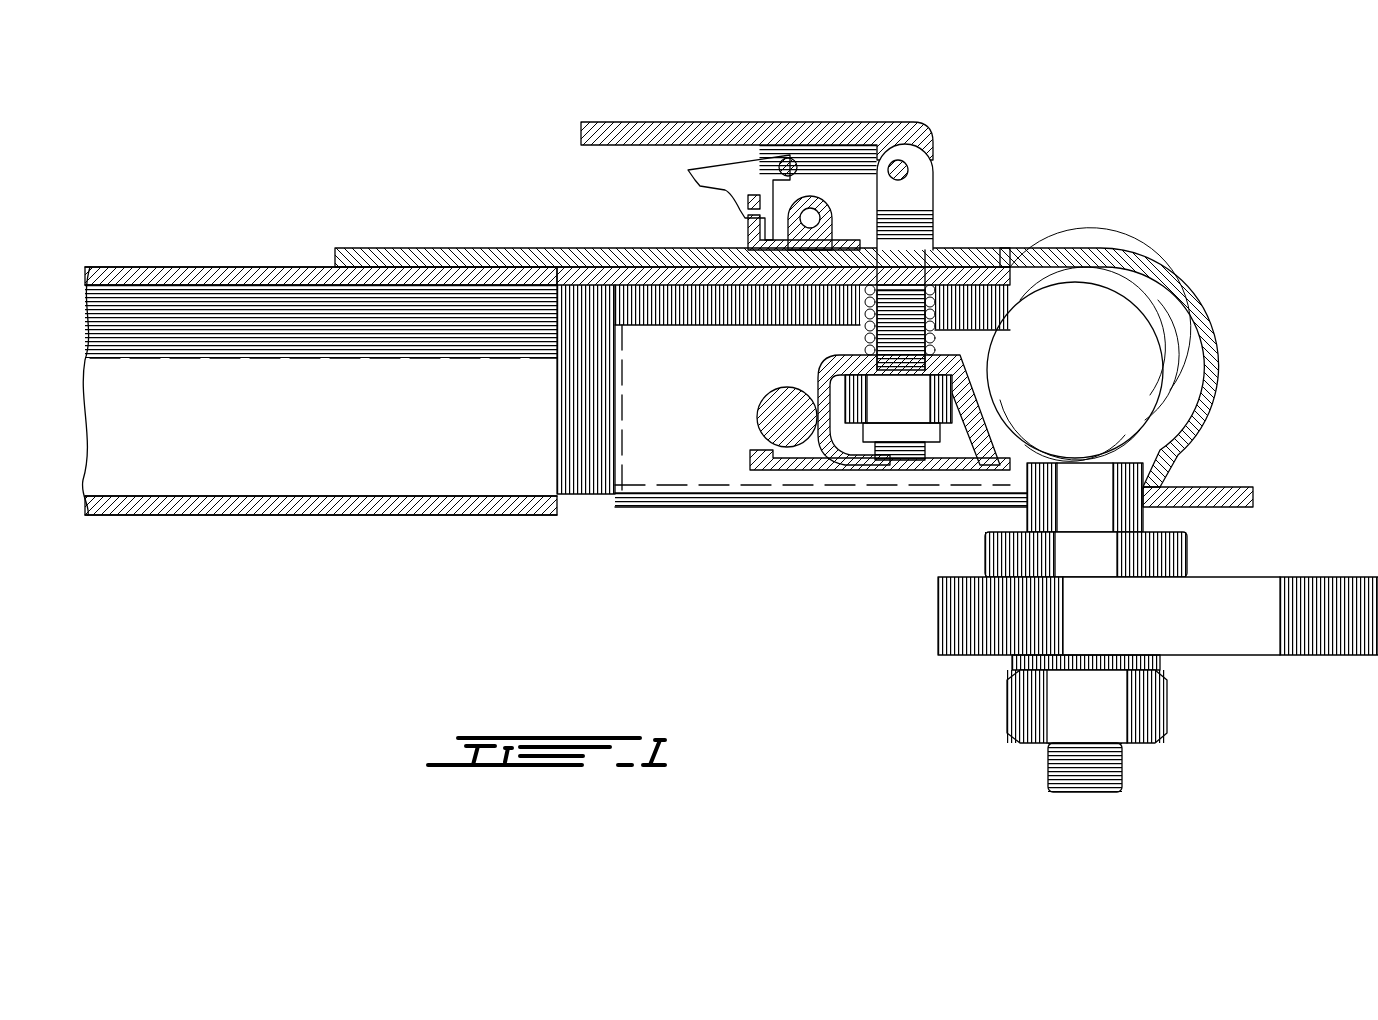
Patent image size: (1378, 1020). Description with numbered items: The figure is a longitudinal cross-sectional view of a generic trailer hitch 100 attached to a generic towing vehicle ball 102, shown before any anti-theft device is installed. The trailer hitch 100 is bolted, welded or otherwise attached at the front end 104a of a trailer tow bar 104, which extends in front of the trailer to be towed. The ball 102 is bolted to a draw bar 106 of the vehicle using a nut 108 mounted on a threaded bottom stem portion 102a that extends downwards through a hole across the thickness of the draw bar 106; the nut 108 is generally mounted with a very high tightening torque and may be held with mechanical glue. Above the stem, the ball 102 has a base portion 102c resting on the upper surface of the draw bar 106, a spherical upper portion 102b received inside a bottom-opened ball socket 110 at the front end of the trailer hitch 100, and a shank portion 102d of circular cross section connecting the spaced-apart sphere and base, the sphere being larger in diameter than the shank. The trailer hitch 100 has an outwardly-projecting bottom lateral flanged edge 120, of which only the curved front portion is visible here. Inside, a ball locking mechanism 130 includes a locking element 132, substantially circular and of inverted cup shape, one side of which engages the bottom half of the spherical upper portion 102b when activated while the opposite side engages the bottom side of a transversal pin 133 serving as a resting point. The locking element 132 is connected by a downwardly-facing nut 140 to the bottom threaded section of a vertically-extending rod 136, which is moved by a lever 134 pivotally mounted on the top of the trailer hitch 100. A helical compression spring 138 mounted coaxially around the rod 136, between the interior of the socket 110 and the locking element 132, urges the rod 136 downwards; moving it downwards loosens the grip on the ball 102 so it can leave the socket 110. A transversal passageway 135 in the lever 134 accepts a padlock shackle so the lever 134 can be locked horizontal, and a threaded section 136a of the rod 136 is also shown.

The trailer hitch 100 is at (1165, 215).
The towing vehicle ball 102 is at (1100, 330).
The threaded bottom stem portion 102a is at (1090, 792).
The spherical upper portion 102b is at (1155, 372).
The base portion 102c is at (1188, 556).
The shank portion 102d is at (1047, 510).
The trailer tow bar 104 is at (283, 507).
The front end 104a is at (458, 508).
The draw bar 106 is at (1280, 627).
The nut 108 is at (1027, 706).
The ball socket 110 is at (1010, 252).
The bottom lateral flanged edge 120 is at (1215, 487).
The ball locking mechanism 130 is at (730, 368).
The locking element 132 is at (772, 470).
The transversal pin 133 is at (775, 418).
The lever 134 is at (800, 122).
The transversal passageway 135 is at (812, 216).
The vertically-extending rod 136 is at (915, 190).
The latch nut 136a is at (895, 458).
The helical compression spring 138 is at (860, 345).
The downwardly-facing nut 140 is at (945, 385).